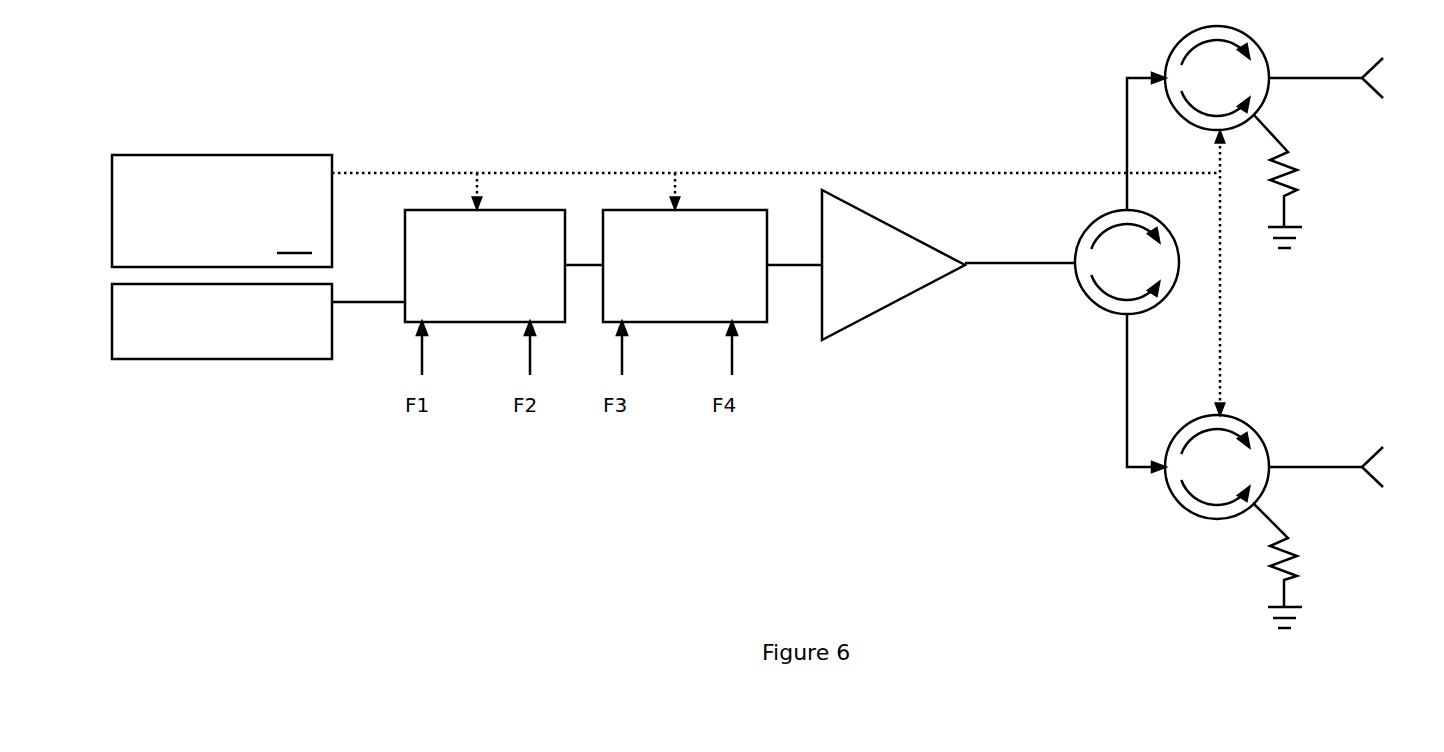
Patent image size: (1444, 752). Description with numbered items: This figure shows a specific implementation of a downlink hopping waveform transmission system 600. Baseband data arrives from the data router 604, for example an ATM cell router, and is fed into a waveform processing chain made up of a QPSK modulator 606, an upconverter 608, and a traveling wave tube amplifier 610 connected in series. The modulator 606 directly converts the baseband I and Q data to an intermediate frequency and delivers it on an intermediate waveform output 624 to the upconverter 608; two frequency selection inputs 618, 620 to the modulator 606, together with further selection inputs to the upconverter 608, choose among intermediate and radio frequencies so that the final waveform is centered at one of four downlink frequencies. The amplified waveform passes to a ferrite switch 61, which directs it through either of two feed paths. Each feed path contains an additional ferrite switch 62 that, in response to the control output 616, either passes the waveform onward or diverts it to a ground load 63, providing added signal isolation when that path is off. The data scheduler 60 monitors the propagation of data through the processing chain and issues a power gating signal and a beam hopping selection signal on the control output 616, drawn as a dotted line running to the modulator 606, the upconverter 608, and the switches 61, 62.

The downlink hopping waveform transmission system 600 is at (398, 533).
The scheduler / antenna 60 is at (1333, 82).
The data router 604 is at (312, 339).
The QPSK modulator 606 is at (548, 308).
The upconverter 608 is at (743, 309).
The traveling wave tube amplifier 610 is at (868, 301).
The control output 616 is at (375, 173).
The frequency selection input 618 is at (480, 200).
The frequency selection input 620 is at (680, 195).
The intermediate waveform output 624 is at (597, 265).
The circulator 61 is at (1147, 271).
The circulator switch 62 is at (1238, 85).
The load resistor 63 is at (1297, 168).